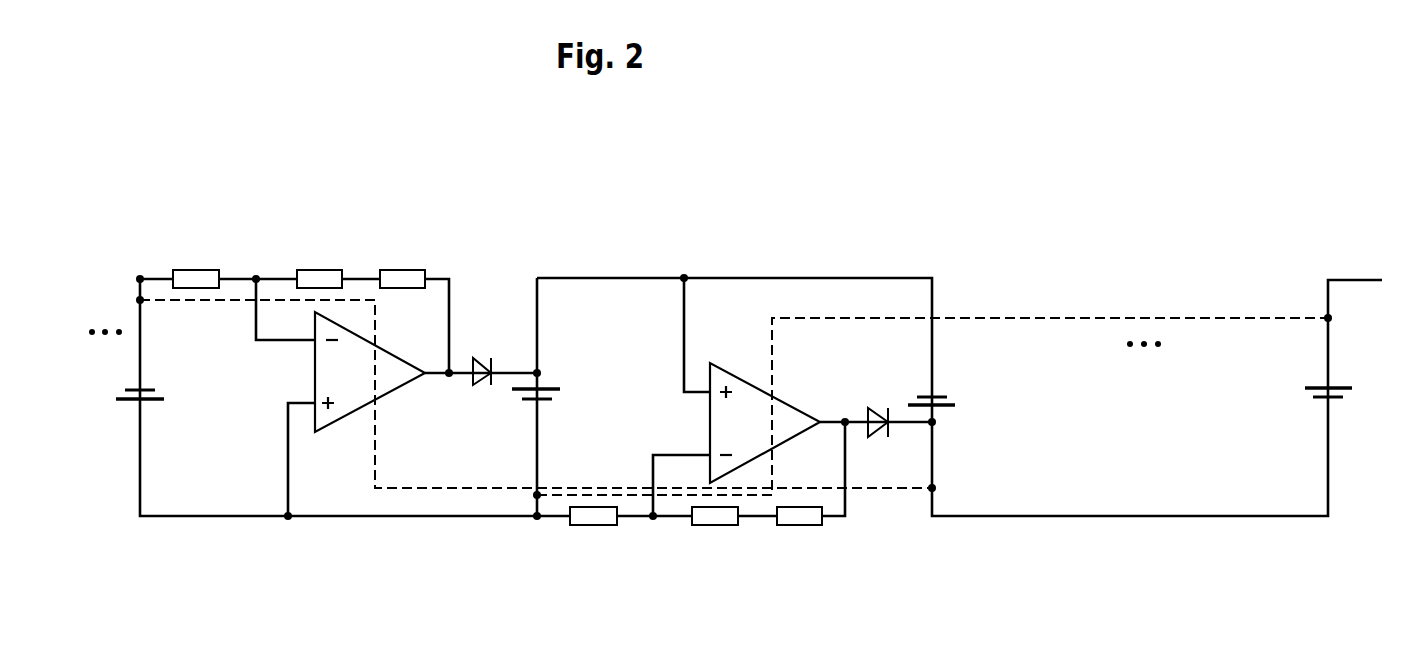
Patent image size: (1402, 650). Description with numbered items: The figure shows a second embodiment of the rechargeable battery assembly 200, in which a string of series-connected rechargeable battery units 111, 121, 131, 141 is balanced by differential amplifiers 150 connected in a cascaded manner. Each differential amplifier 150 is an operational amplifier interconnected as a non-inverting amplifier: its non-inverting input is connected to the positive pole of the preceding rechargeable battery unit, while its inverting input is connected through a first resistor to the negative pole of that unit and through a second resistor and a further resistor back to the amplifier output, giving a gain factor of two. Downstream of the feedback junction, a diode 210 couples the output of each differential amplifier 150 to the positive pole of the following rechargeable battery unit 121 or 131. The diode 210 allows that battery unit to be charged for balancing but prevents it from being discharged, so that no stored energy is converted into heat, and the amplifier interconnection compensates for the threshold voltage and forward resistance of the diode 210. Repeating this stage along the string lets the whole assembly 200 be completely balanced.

The rechargeable battery assembly 200 is at (862, 260).
The first rechargeable battery unit 111 is at (158, 401).
The second rechargeable battery unit 121 is at (537, 387).
The third rechargeable battery unit 131 is at (932, 398).
The fourth rechargeable battery unit 141 is at (1320, 400).
The differential amplifier 150 is at (330, 425).
The diode 210 is at (482, 386).